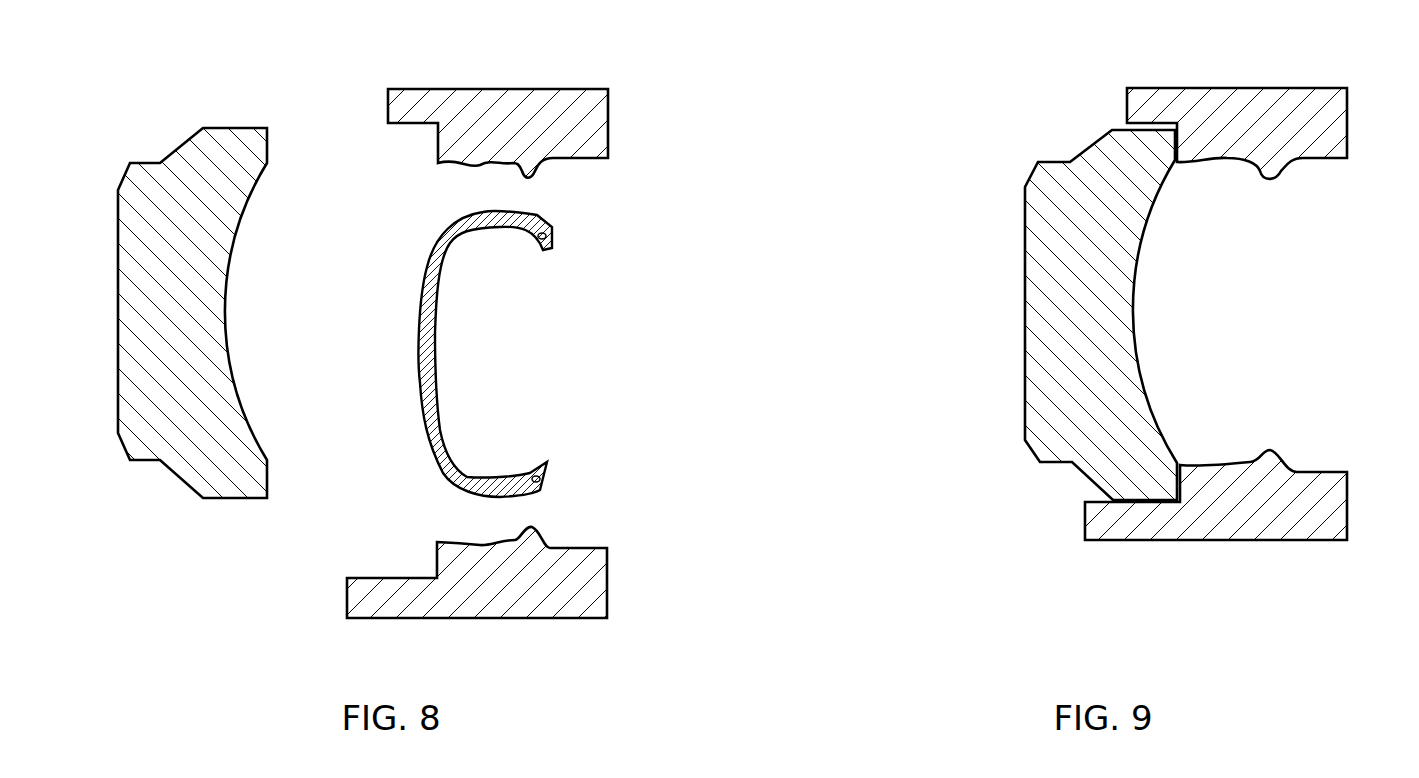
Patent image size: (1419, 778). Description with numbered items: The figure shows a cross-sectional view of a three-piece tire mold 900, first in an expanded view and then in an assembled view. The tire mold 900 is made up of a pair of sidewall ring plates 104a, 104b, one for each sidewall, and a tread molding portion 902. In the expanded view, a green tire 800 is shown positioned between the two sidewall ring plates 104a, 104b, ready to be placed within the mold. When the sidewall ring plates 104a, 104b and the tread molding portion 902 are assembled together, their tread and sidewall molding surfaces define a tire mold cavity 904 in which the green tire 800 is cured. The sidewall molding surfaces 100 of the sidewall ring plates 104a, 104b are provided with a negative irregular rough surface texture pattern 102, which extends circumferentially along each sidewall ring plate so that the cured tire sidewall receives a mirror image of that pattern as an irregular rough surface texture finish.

In FIG. 8, the sidewall molding surfaces 100 is at (492, 163).
In FIG. 8, the negative irregular rough surface texture pattern 102 is at (462, 162).
In FIG. 8, the green tire 800 is at (440, 417).
In FIG. 9, the tire mold 900 is at (1097, 334).
In FIG. 9, the tread molding portion 902 is at (1137, 262).
In FIG. 9, the tire mold cavity 904 is at (1226, 334).
In FIG. 9, the sidewall ring plate 104a is at (1227, 158).
In FIG. 9, the sidewall ring plate 104b is at (1228, 458).